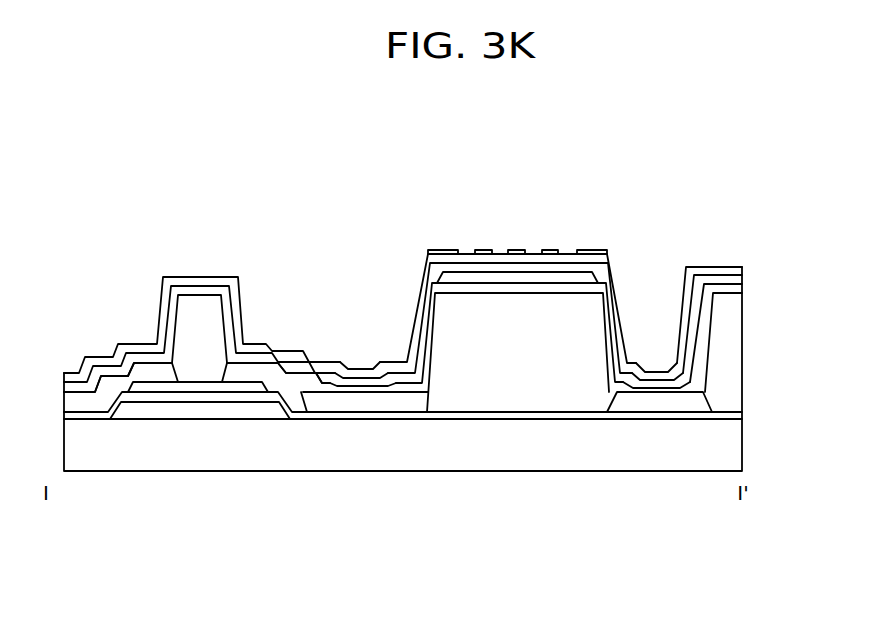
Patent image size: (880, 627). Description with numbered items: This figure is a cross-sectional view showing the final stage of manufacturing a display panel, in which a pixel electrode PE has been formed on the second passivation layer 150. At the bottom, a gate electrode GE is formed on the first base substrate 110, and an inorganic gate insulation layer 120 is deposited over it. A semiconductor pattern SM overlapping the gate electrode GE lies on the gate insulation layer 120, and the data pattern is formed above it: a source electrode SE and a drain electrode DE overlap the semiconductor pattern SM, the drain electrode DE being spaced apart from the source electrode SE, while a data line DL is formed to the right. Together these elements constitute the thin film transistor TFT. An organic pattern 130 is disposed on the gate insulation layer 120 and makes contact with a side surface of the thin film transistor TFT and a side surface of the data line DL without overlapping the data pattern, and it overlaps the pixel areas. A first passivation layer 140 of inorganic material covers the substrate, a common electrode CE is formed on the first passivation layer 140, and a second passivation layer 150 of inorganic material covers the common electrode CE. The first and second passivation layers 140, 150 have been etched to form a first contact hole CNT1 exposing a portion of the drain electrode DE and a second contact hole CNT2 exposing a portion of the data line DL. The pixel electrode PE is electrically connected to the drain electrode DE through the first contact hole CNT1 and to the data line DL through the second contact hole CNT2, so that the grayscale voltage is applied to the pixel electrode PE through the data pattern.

The first base substrate 110 is at (741, 448).
The gate insulation layer 120 is at (741, 413).
The organic pattern 130 is at (741, 364).
The first passivation layer 140 is at (741, 290).
The second passivation layer 150 is at (741, 279).
The pixel electrode PE is at (718, 270).
The common electrode CE is at (535, 278).
The data line DL is at (660, 402).
The gate electrode GE is at (175, 412).
The semiconductor pattern SM is at (230, 388).
The source electrode SE is at (99, 402).
The drain electrode DE is at (272, 450).
The thin film transistor TFT is at (193, 469).
The first contact hole CNT1 is at (362, 368).
The second contact hole CNT2 is at (655, 368).